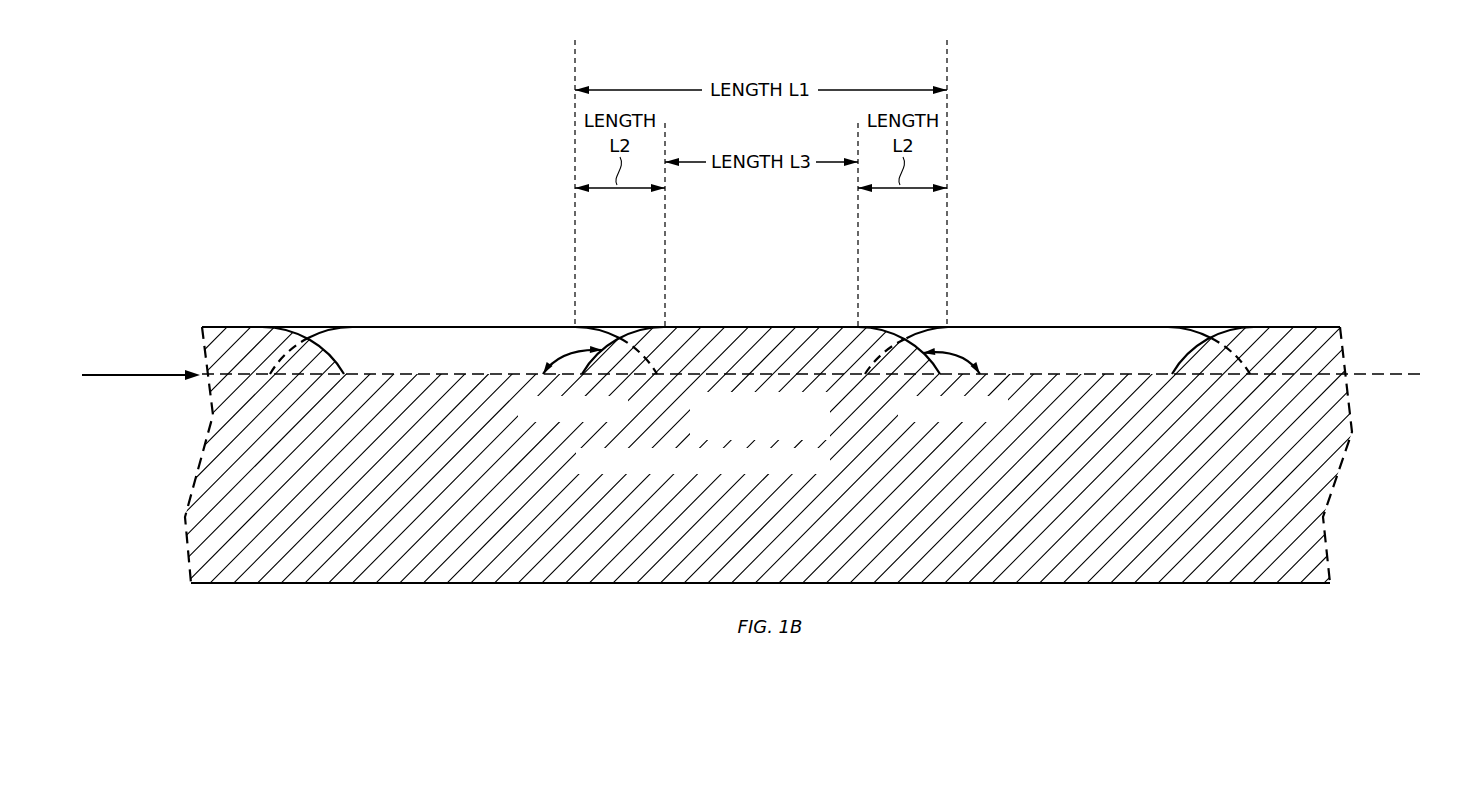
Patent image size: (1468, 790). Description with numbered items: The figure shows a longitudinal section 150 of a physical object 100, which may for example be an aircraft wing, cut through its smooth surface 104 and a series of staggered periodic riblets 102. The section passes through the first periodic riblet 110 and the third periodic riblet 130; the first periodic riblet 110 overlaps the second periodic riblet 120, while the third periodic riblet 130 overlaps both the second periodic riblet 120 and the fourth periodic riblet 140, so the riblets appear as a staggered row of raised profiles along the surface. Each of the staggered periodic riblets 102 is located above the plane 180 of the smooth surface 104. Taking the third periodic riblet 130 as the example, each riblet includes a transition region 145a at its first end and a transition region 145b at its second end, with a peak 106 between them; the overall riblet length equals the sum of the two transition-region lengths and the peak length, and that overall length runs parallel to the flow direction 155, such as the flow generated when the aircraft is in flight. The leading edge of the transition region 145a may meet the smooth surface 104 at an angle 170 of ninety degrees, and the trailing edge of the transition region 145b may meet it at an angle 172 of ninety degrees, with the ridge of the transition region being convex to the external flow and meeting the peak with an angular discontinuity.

The physical object 100 is at (1183, 611).
The staggered periodic riblets 102 is at (1295, 340).
The smooth surface 104 is at (1140, 372).
The peak 106 is at (810, 326).
The first periodic riblet 110 is at (233, 340).
The second periodic riblet 120 is at (397, 340).
The third periodic riblet 130 is at (728, 340).
The fourth periodic riblet 140 is at (1018, 340).
The transition region 145a is at (636, 336).
The transition region 145b is at (876, 345).
The longitudinal section 150 is at (1210, 104).
The flow direction 155 is at (117, 402).
The angle 170 is at (573, 357).
The angle 172 is at (950, 357).
The plane 180 is at (1418, 402).